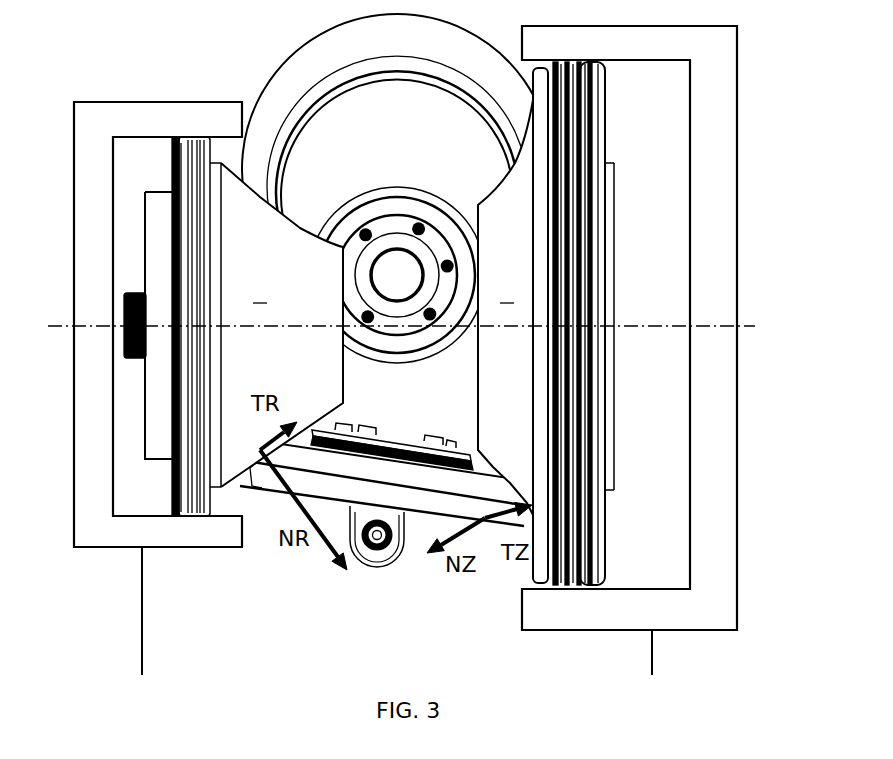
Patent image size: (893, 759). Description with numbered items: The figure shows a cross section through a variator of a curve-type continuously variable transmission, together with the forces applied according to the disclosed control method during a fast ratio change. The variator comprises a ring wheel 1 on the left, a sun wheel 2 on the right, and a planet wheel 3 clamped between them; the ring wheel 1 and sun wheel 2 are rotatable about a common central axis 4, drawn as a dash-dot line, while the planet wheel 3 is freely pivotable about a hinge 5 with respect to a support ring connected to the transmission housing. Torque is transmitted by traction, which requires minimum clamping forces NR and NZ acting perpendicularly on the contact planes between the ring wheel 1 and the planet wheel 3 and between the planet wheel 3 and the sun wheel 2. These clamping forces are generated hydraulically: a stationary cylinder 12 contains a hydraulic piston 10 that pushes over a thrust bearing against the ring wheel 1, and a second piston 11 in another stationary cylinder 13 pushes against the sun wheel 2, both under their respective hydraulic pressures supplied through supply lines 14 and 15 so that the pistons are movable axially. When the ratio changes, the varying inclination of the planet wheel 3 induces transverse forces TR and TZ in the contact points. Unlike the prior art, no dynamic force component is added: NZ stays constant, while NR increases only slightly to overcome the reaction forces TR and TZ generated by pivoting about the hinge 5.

The ring wheel 1 is at (233, 326).
The sun wheel 2 is at (572, 323).
The planet wheel 3 is at (352, 148).
The common central axis 4 is at (65, 322).
The hinge 5 is at (390, 550).
The hydraulic piston 10 is at (192, 158).
The piston 11 is at (568, 95).
The stationary cylinder 12 is at (85, 173).
The stationary cylinder 13 is at (725, 83).
The supply line 14 is at (142, 608).
The supply line 15 is at (652, 652).